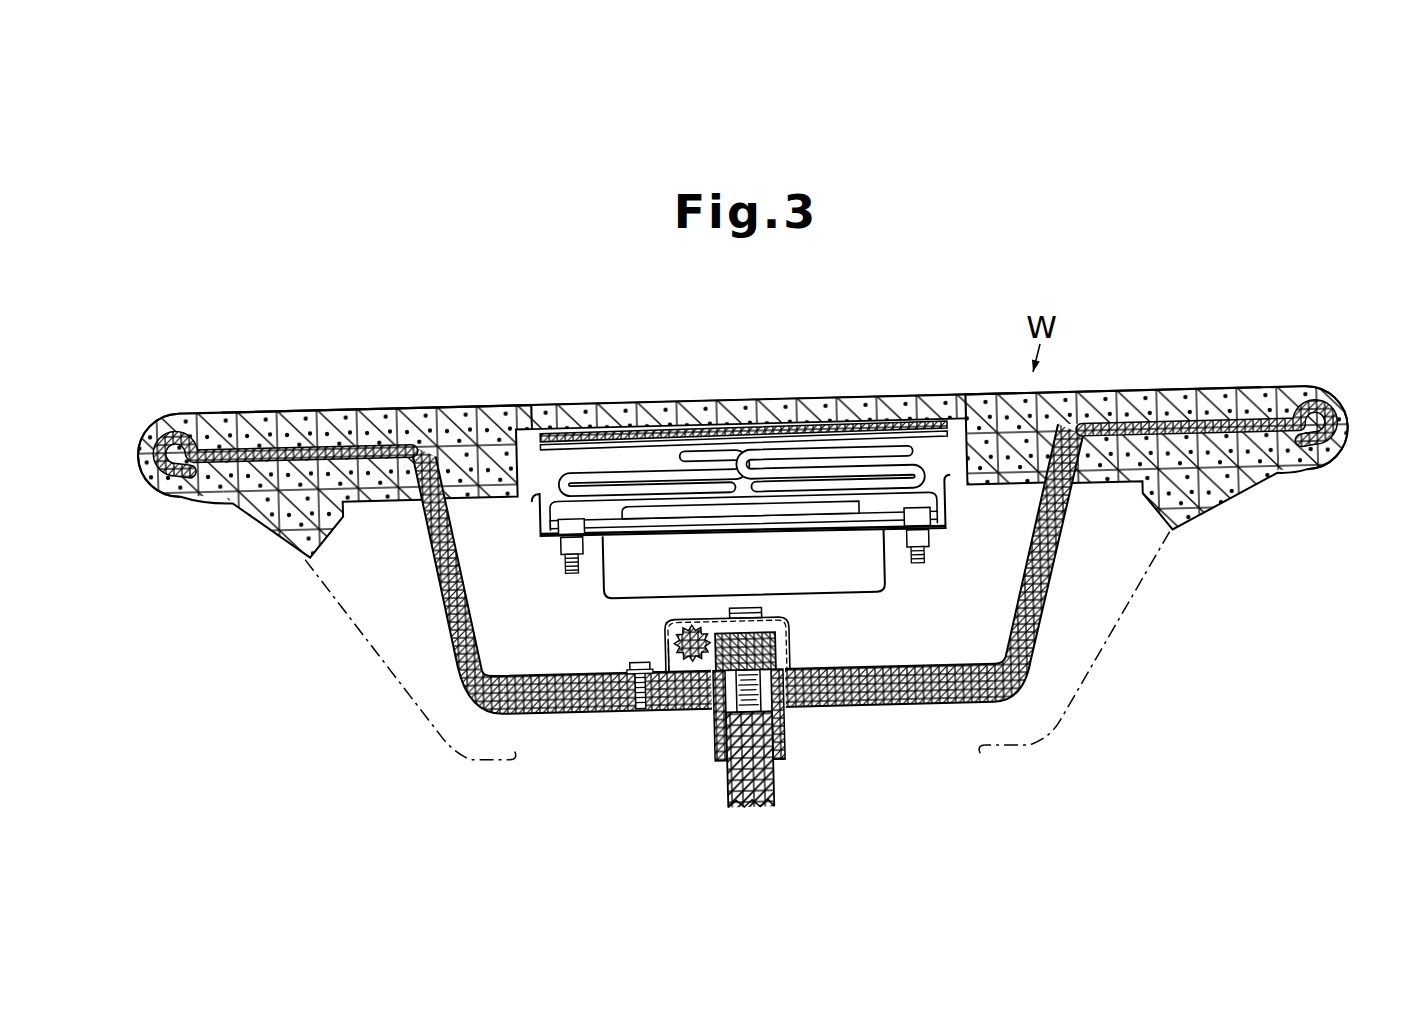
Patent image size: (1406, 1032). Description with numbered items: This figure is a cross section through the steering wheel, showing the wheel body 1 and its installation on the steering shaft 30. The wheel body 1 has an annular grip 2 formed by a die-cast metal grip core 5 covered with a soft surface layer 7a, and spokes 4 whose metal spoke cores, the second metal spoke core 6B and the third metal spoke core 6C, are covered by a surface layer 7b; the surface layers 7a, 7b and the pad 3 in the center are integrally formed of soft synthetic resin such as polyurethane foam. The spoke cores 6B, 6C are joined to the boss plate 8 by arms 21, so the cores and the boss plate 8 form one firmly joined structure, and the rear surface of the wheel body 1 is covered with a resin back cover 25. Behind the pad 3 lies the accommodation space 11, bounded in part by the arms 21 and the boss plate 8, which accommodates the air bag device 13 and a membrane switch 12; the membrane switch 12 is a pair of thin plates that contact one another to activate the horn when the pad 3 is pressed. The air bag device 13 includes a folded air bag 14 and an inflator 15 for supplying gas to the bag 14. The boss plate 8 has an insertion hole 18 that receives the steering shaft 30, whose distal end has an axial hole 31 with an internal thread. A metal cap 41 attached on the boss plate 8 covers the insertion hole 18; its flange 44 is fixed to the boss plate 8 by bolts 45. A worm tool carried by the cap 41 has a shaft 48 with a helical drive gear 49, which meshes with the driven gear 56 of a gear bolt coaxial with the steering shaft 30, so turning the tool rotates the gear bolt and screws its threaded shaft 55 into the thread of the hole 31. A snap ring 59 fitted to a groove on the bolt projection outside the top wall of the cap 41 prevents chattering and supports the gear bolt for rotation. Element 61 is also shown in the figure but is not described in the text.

The wheel body 1 is at (478, 388).
The annular grip 2 is at (168, 412).
The pad 3 is at (634, 412).
The spokes 4 is at (355, 430).
The metal grip core 5 is at (170, 497).
The second metal spoke core 6B is at (290, 437).
The third metal spoke core 6C is at (1198, 415).
The surface layer 7a is at (148, 432).
The surface layer 7b is at (277, 520).
The boss plate 8 is at (697, 716).
The accommodation space 11 is at (832, 432).
The membrane switch 12 is at (915, 437).
The air bag device 13 is at (567, 494).
The folded air bag 14 is at (628, 463).
The inflator 15 is at (626, 525).
The insertion hole 18 is at (722, 758).
The arms 21 is at (452, 565).
The resin back cover 25 is at (393, 683).
The steering shaft 30 is at (773, 780).
The hole 31 is at (716, 742).
The metal cap 41 is at (790, 622).
The flange 44 is at (622, 670).
The bolts 45 is at (630, 660).
The shaft 48 is at (698, 620).
The drive gear 49 is at (665, 648).
The threaded shaft 55 is at (765, 712).
The driven gear 56 is at (768, 650).
The snap ring 59 is at (753, 608).
The adhesive layer 61 is at (732, 438).